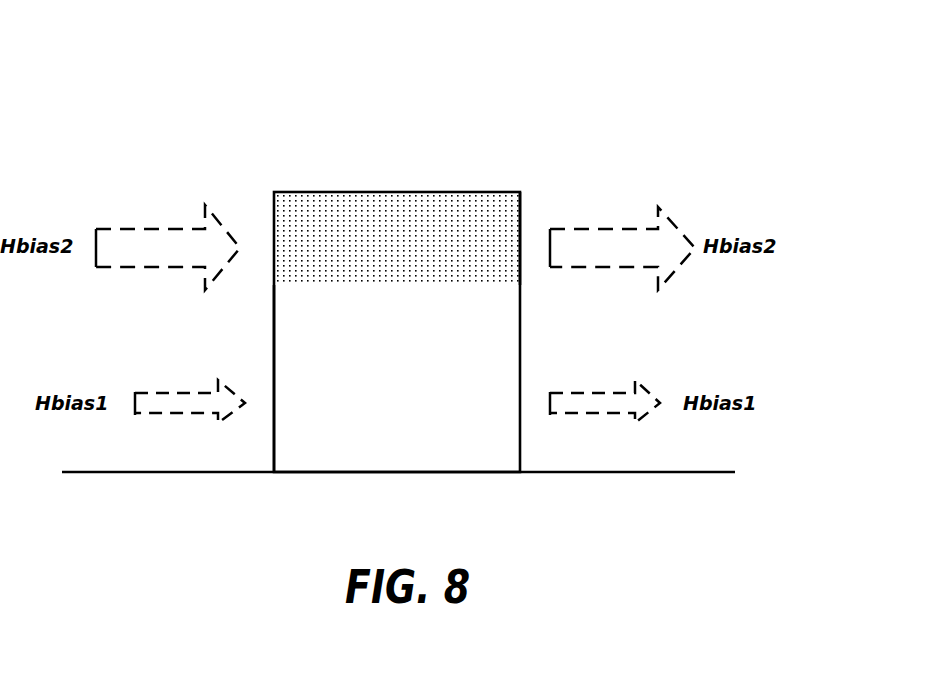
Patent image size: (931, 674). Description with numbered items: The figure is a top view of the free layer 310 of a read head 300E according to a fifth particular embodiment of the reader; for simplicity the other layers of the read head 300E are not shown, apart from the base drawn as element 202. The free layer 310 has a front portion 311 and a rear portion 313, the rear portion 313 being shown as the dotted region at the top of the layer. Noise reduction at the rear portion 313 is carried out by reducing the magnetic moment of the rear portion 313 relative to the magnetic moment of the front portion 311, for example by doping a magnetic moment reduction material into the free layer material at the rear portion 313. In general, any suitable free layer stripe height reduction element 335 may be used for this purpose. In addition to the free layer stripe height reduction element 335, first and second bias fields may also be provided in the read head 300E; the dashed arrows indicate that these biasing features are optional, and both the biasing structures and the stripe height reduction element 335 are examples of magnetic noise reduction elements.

The read head 300E is at (607, 82).
The substrate 202 is at (678, 472).
The free layer 310 is at (295, 192).
The free layer stripe height reduction element 335 is at (377, 218).
The rear portion 313 is at (500, 228).
The front portion 311 is at (422, 443).